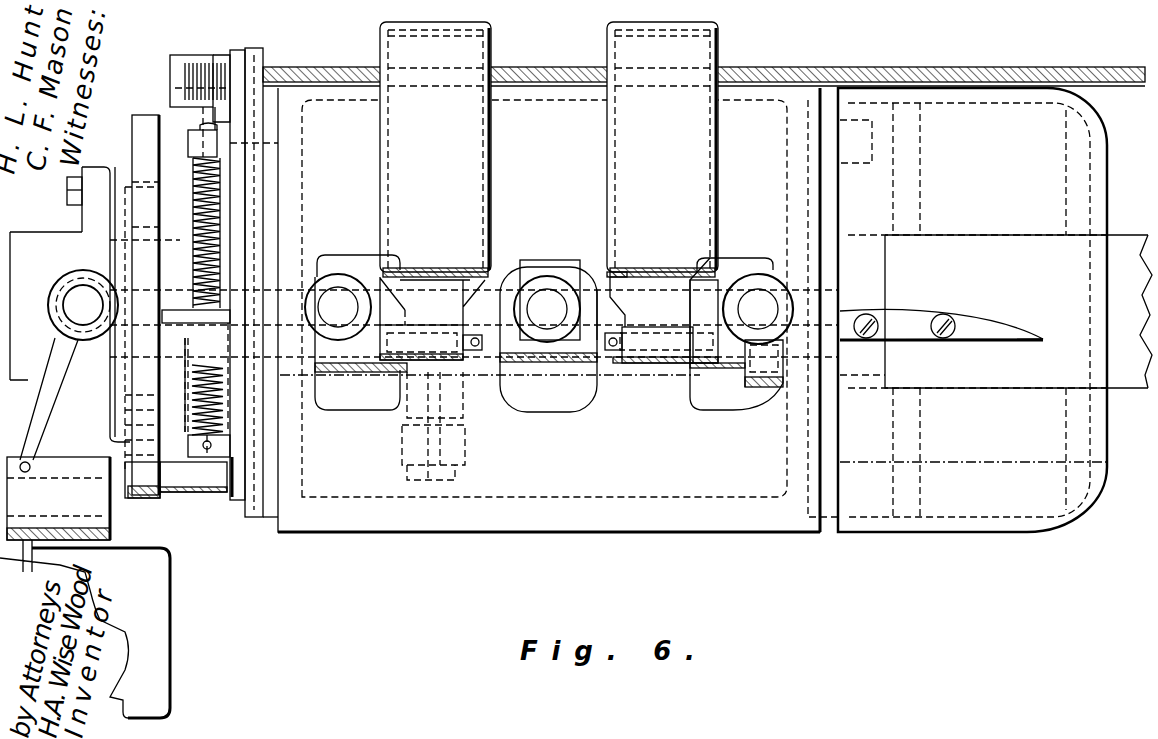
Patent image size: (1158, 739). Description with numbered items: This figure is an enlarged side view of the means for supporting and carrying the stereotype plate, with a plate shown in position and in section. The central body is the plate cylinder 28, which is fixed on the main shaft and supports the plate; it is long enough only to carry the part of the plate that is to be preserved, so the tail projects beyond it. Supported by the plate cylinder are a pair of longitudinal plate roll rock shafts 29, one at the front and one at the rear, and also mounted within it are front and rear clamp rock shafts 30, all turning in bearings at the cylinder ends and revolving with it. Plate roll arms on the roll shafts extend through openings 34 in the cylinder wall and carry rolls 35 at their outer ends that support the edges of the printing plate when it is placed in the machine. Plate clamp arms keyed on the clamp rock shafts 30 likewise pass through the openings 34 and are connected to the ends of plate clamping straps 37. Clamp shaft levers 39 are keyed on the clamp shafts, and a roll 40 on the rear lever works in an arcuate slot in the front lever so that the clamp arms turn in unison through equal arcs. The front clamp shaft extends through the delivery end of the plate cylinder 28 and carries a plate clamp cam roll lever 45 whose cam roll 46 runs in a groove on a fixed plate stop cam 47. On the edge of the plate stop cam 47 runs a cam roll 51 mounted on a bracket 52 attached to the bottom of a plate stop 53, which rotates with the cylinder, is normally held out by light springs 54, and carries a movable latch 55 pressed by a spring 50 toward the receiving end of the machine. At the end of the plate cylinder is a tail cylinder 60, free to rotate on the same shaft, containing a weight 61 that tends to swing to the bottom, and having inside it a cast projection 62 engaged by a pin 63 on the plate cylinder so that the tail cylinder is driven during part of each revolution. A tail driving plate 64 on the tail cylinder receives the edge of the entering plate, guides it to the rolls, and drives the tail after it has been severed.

The plate cylinder 28 is at (587, 522).
The plate roll rock shafts 29 is at (603, 285).
The clamp rock shafts 30 is at (530, 358).
The openings 34 is at (353, 404).
The rolls 35 is at (362, 355).
The plate clamping straps 37 is at (478, 56).
The clamp shaft levers 39 is at (427, 387).
The roll 40 is at (410, 458).
The plate clamp cam roll lever 45 is at (178, 442).
The cam roll 46 is at (137, 402).
The plate stop cam 47 is at (142, 140).
The spring 50 is at (203, 62).
The cam roll 51 is at (147, 493).
The bracket 52 is at (216, 487).
The plate stop 53 is at (278, 71).
The light springs 54 is at (194, 227).
The movable latch 55 is at (252, 75).
The tail cylinder 60 is at (945, 527).
The weight 61 is at (978, 468).
The cast projection 62 is at (893, 142).
The pin 63 is at (866, 152).
The tail driving plate 64 is at (978, 320).